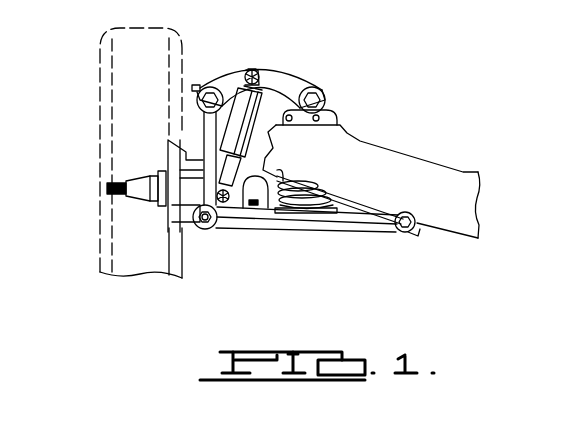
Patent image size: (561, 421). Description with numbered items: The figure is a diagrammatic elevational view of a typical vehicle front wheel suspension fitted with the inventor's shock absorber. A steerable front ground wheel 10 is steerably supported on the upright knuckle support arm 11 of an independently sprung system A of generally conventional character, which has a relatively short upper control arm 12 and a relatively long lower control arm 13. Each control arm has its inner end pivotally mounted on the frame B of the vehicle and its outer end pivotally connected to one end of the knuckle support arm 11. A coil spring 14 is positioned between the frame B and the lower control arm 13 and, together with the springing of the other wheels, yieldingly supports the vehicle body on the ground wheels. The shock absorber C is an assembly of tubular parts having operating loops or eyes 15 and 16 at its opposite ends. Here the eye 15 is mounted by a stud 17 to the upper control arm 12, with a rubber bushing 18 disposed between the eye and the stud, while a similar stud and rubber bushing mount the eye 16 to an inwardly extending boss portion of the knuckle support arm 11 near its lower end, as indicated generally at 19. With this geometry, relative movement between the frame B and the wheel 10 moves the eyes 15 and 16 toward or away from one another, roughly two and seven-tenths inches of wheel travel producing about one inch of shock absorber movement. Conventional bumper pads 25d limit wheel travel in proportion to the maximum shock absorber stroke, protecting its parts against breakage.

The steerable front ground wheel 10 is at (108, 70).
The upright knuckle support arm 11 is at (204, 130).
The upper control arm 12 is at (303, 80).
The lower control arm 13 is at (367, 225).
The coil spring 14 is at (313, 208).
The eye 15 is at (253, 68).
The eye 16 is at (226, 220).
The stud 17 is at (258, 72).
The rubber bushing 18 is at (262, 76).
The mounting of eye 16 on knuckle support arm 19 is at (216, 225).
The bumper pad 25d is at (232, 88).
The independently sprung system A is at (230, 82).
The frame B is at (378, 153).
The shock absorber C is at (280, 130).